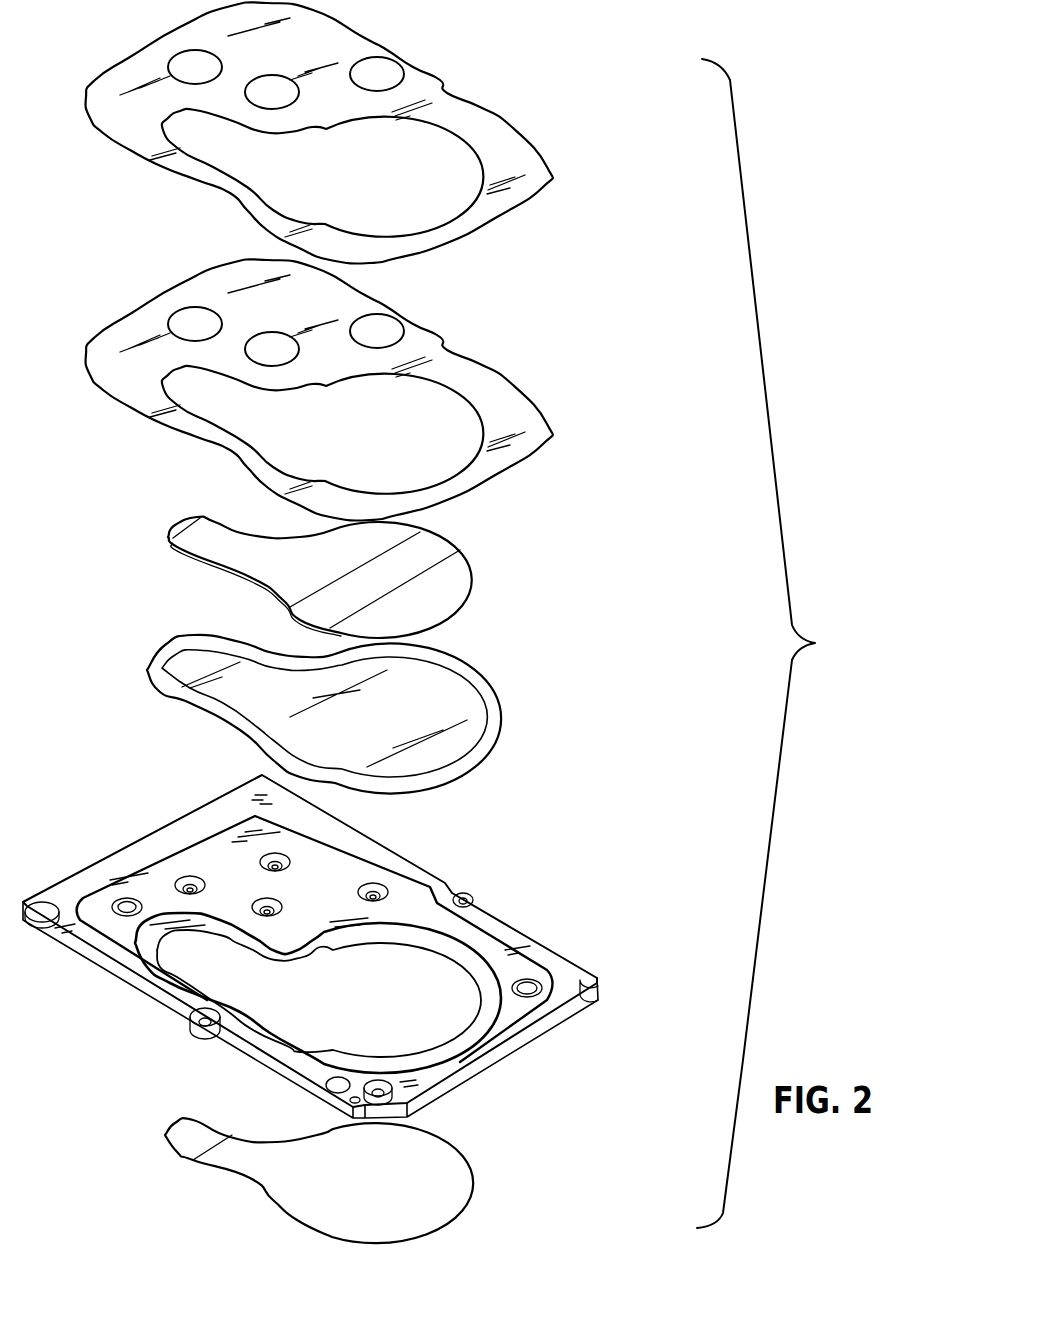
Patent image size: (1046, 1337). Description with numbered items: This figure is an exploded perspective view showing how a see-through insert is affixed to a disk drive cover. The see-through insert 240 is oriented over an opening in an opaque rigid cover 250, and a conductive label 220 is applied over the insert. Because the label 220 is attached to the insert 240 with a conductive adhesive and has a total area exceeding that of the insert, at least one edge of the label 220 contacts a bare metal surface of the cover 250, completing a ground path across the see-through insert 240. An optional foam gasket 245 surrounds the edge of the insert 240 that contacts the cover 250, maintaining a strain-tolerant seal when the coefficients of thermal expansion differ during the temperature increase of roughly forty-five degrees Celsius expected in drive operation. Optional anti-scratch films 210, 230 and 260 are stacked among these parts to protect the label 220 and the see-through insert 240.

The anti-scratch film 210 is at (525, 158).
The conductive label 220 is at (530, 413).
The anti-scratch film 230 is at (462, 578).
The see-through insert 240 is at (457, 730).
The foam gasket 245 is at (493, 697).
The opaque rigid cover 250 is at (567, 965).
The anti-scratch film 260 is at (453, 1172).